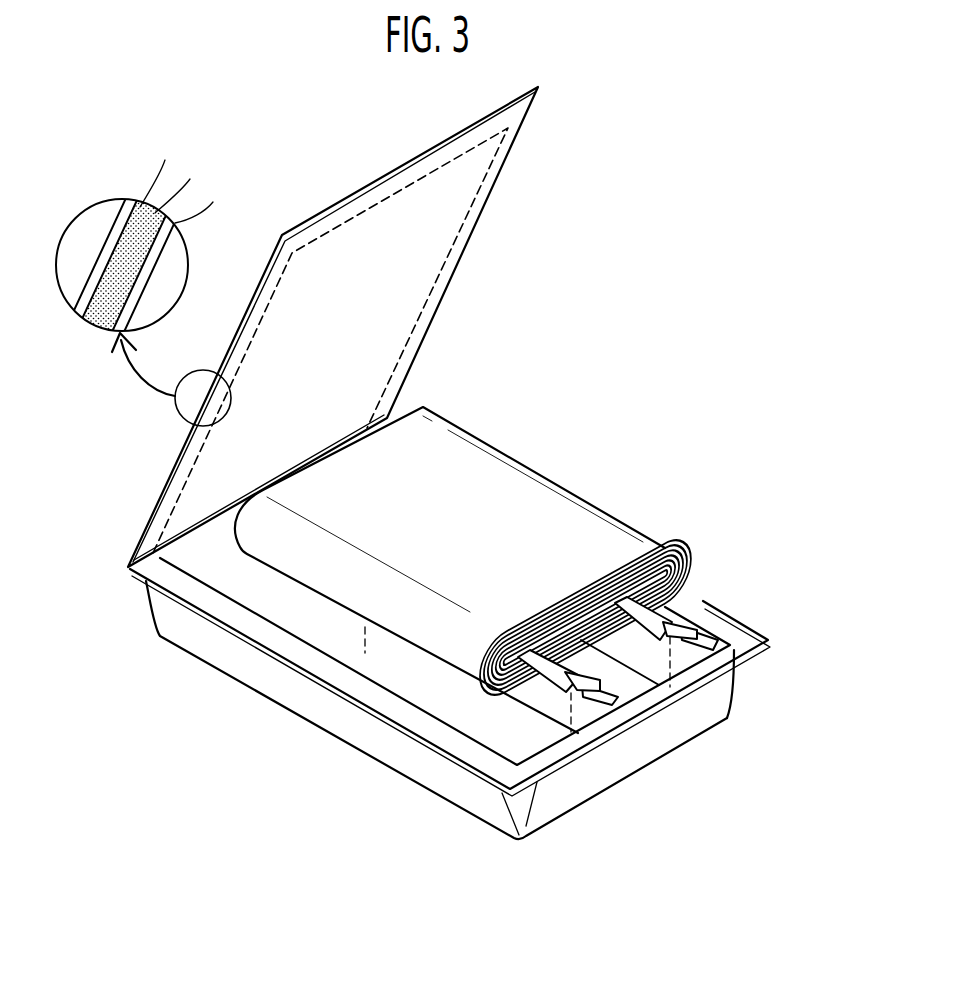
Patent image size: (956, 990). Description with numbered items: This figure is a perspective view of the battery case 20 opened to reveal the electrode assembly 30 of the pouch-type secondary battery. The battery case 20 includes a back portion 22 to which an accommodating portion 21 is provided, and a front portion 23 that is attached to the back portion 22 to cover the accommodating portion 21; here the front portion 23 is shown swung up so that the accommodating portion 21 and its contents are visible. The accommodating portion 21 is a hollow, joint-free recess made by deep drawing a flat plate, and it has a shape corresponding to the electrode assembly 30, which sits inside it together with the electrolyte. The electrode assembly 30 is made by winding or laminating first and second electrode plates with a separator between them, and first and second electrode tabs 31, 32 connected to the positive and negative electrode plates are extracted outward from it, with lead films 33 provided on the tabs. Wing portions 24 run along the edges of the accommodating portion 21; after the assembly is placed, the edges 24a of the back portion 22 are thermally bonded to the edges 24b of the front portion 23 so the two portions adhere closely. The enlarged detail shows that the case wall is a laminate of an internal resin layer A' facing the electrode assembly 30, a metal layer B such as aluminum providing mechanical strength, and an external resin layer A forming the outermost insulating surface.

The battery case 20 is at (400, 463).
The accommodating portion 21 is at (494, 722).
The back portion 22 is at (357, 748).
The front portion 23 is at (295, 327).
The wing portions 24 is at (400, 668).
The edges of the back portion 24a is at (233, 612).
The edges of the front portion 24b is at (152, 538).
The electrode assembly 30 is at (540, 623).
The first electrode tab 31 is at (727, 647).
The second electrode tab 32 is at (618, 697).
The lead films 33 is at (595, 700).
The external resin layer A is at (119, 235).
The metal layer B is at (155, 213).
The internal resin layer A' is at (171, 256).